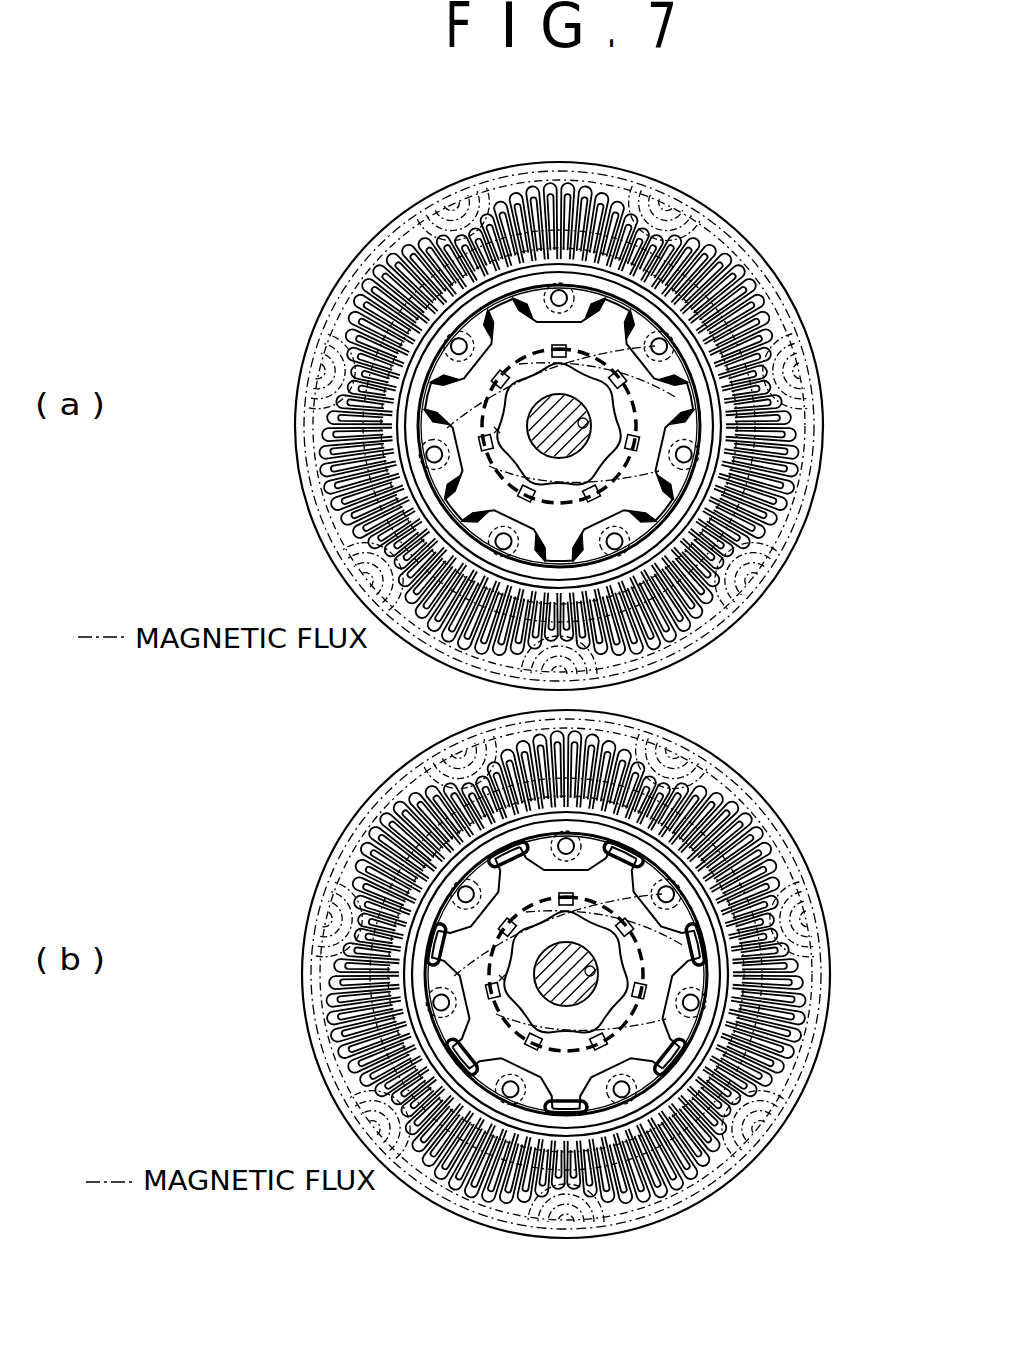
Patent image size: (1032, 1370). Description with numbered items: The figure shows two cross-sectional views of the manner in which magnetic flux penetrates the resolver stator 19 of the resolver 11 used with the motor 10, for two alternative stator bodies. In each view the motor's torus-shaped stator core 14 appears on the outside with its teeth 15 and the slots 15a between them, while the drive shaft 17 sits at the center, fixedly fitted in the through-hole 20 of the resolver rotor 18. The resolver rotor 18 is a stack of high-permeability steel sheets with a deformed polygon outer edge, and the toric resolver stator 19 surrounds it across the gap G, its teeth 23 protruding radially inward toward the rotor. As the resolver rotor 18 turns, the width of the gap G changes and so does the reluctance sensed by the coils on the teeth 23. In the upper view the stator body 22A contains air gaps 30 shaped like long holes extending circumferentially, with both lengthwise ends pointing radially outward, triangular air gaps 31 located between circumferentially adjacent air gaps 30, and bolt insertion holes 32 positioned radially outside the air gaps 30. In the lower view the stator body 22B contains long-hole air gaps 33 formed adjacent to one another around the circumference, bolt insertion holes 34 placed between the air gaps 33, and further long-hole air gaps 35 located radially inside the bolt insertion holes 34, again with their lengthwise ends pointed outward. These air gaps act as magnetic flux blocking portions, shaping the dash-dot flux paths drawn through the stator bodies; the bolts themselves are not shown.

The motor 10 is at (852, 302).
The resolver 11 is at (640, 300).
The stator core 14 is at (812, 357).
The teeth 15 is at (645, 535).
The slots 15a is at (770, 468).
The drive shaft 17 is at (700, 392).
The resolver rotor 18 is at (650, 312).
The resolver stator 19 is at (447, 265).
The through-hole 20 is at (590, 420).
The stator body 22A is at (690, 490).
The stator body 22B is at (722, 1088).
The teeth 23 is at (705, 607).
The air gaps 30 is at (398, 348).
The triangular air gaps 31 is at (490, 430).
The bolt insertion holes 32 is at (452, 297).
The air gaps 33 is at (480, 830).
The bolt insertion holes 34 is at (470, 870).
The air gaps 35 is at (430, 935).
The gap G is at (400, 490).